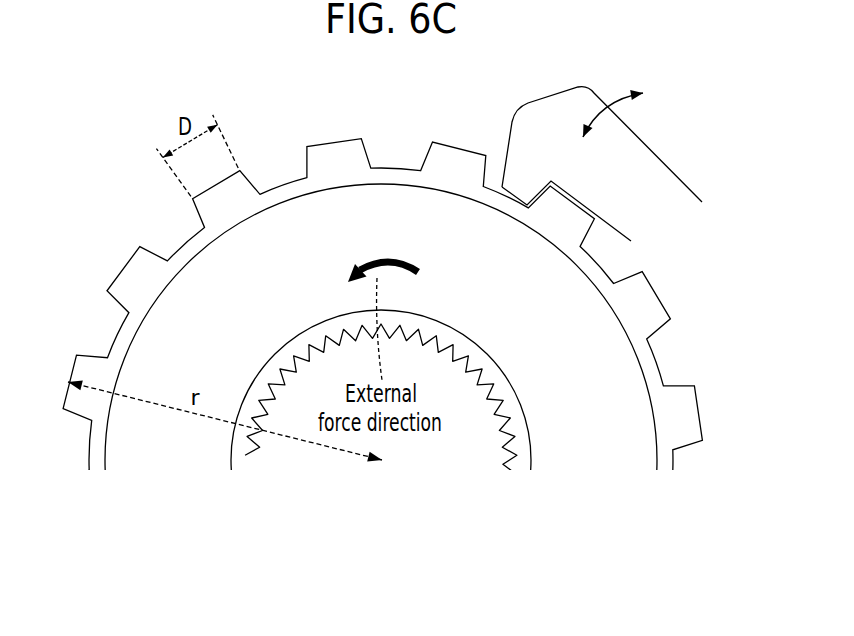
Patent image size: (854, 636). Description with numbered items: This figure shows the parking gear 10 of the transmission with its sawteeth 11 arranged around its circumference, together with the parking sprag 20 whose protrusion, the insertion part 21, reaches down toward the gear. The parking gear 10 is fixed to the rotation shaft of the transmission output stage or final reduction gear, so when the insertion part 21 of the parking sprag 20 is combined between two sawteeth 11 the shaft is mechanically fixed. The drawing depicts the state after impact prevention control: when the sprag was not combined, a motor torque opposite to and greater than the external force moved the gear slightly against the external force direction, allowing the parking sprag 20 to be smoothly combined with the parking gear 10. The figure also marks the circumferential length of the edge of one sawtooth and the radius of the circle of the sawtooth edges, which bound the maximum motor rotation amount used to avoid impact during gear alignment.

The parking gear 10 is at (493, 437).
The sawtooth 11 is at (568, 210).
The parking sprag 20 is at (660, 158).
The insertion part 21 is at (522, 186).